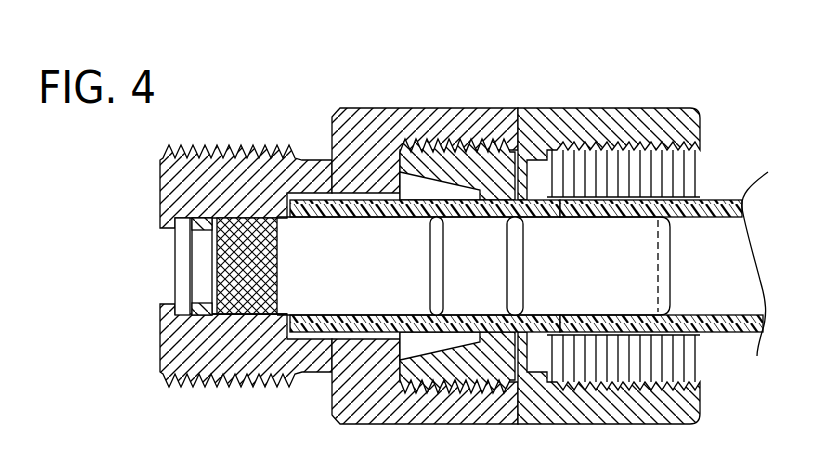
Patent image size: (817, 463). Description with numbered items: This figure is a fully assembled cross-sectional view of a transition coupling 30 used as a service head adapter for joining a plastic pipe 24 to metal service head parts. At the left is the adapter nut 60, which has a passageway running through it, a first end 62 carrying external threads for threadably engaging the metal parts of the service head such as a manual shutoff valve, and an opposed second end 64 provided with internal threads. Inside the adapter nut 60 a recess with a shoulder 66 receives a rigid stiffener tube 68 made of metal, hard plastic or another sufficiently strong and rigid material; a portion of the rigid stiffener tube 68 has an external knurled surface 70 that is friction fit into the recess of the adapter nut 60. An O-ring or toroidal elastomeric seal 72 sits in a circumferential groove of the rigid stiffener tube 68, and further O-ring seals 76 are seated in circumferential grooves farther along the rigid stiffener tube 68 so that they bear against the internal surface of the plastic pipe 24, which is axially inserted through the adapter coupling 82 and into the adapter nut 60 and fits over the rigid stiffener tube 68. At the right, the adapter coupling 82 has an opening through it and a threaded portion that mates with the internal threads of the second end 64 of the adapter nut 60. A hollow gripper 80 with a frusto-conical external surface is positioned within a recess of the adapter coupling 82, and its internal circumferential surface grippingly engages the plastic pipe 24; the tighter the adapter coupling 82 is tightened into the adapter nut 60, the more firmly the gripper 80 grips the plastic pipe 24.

The plastic pipe 24 is at (723, 198).
The transition coupling 30 is at (396, 225).
The adapter nut 60 is at (337, 110).
The first end 62 is at (160, 186).
The second end 64 is at (510, 110).
The shoulder 66 is at (222, 318).
The rigid stiffener tube 68 is at (315, 272).
The external knurled surface 70 is at (257, 320).
The toroidal elastomeric seal 72 is at (200, 233).
The toroidal elastomeric seals 76 is at (442, 275).
The hollow gripper 80 is at (468, 108).
The adapter coupling 82 is at (633, 110).